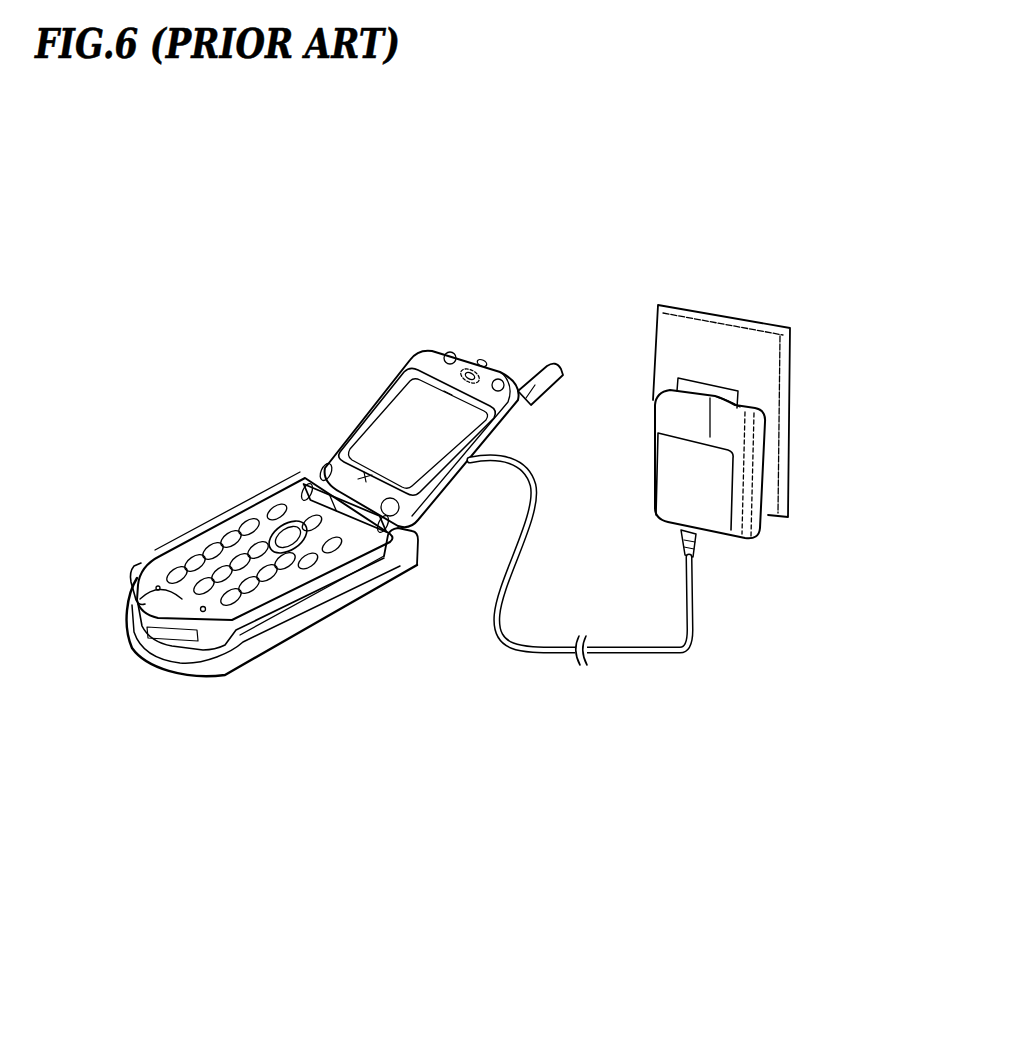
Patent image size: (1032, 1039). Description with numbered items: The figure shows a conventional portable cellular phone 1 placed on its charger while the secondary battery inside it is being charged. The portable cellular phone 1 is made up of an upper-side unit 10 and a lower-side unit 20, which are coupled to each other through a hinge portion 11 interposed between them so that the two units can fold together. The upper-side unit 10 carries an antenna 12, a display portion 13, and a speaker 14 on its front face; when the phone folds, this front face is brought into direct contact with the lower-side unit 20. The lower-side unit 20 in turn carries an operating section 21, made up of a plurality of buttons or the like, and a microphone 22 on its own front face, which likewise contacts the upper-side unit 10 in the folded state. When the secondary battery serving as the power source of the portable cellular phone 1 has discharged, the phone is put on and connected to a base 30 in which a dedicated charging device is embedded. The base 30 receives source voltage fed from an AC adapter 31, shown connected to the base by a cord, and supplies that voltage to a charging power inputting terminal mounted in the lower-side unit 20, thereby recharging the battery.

The portable cellular phone 1 is at (295, 235).
The upper-side unit 10 is at (459, 352).
The hinge portion 11 is at (321, 478).
The antenna 12 is at (562, 388).
The display portion 13 is at (388, 423).
The speaker 14 is at (492, 372).
The lower-side unit 20 is at (297, 597).
The operating section 21 is at (207, 525).
The microphone 22 is at (146, 580).
The base 30 is at (177, 658).
The AC adapter 31 is at (732, 543).